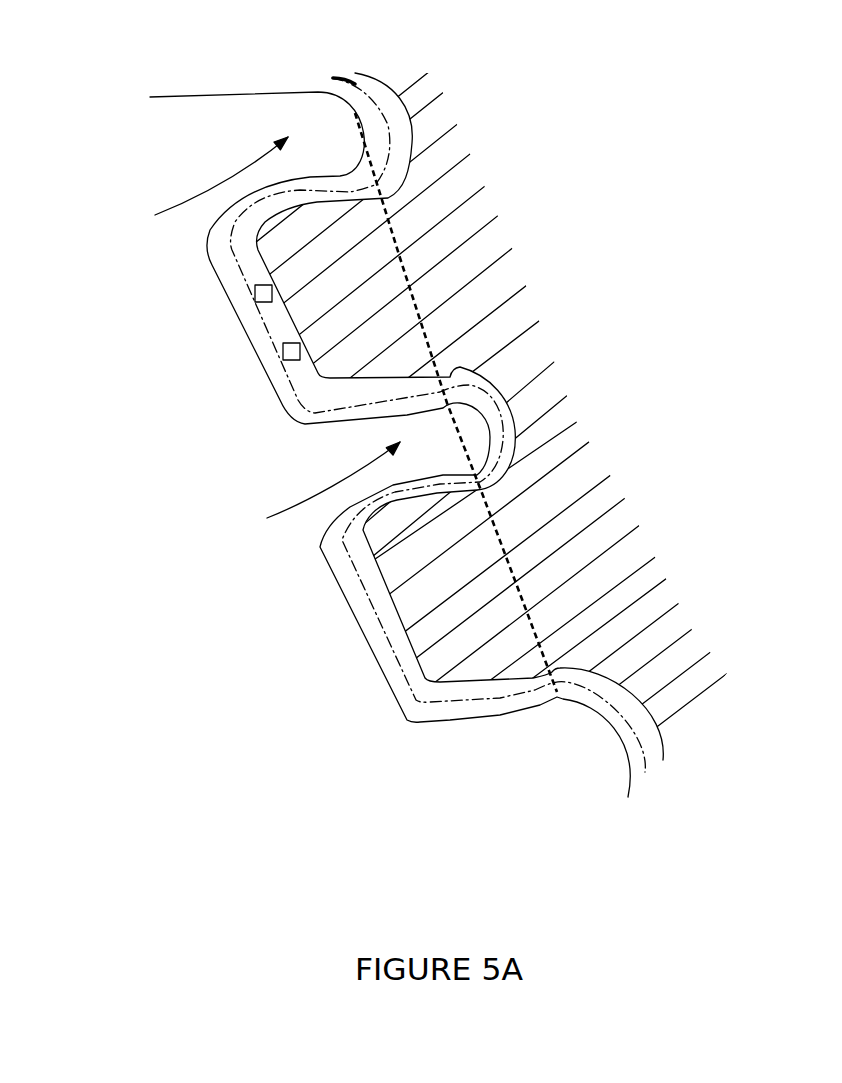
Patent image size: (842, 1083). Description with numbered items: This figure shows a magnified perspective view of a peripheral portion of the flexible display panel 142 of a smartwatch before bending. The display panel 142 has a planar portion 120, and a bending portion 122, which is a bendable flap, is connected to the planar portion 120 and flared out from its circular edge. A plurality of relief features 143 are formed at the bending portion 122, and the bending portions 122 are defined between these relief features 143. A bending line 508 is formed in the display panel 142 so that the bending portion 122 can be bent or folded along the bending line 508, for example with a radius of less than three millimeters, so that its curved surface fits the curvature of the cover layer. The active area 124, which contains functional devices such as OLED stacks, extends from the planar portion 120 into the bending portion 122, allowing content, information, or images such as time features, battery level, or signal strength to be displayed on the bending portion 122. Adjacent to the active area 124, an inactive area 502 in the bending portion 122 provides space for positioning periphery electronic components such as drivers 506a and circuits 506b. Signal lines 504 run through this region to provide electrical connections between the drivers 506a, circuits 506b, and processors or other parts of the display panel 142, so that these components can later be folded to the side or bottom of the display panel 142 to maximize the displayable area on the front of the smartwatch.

The planar portion 120 is at (687, 653).
The bending portion 122 is at (443, 640).
The active area 124 is at (480, 597).
The display panel 142 is at (450, 522).
The relief features 143 is at (250, 340).
The inactive area 502 is at (510, 693).
The signal lines 504 is at (372, 398).
The drivers 506a is at (283, 360).
The circuits 506b is at (255, 302).
The bending line 508 is at (407, 277).